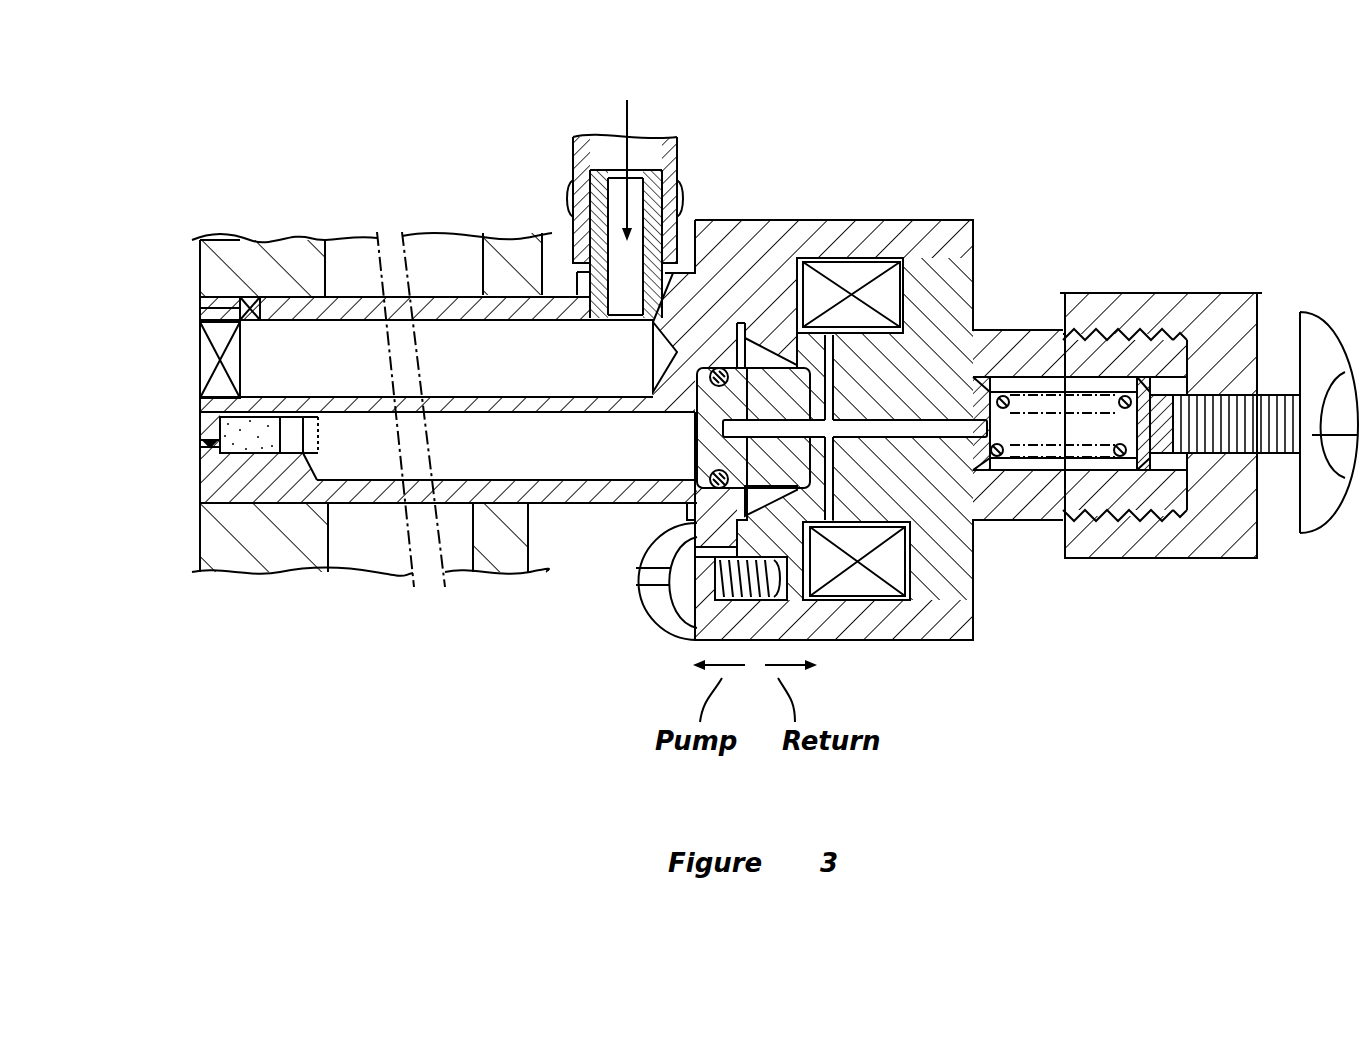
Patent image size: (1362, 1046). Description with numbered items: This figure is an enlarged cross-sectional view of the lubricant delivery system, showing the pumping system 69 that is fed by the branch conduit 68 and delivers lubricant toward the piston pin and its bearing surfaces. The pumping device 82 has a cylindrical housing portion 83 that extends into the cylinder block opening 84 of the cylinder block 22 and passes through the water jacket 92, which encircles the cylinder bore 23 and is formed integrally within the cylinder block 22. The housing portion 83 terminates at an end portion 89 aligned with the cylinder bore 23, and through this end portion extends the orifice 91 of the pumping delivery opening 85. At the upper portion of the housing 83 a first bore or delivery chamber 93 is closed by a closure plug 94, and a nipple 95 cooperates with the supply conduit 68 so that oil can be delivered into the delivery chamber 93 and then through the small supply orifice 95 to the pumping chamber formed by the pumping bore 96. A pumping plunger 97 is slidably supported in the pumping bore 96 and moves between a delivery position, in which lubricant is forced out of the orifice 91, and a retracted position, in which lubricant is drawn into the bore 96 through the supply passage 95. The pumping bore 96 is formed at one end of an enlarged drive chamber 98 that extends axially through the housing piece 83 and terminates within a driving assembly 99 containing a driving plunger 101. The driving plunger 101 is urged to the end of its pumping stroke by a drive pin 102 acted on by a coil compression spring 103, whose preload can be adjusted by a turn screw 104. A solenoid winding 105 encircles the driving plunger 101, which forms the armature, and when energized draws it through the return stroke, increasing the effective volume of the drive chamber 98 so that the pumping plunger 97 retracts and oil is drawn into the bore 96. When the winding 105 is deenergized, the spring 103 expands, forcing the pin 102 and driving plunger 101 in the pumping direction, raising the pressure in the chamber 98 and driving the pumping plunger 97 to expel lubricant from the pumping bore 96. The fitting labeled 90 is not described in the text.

The cylinder block 22 is at (234, 255).
The cylinder bore 23 is at (200, 270).
The branch conduit 68 is at (627, 100).
The pumping system 69 is at (1165, 233).
The pumping device 82 is at (1108, 286).
The cylindrical housing portion 83 is at (557, 498).
The cylinder block opening 84 is at (512, 297).
The pumping delivery opening 85 is at (212, 448).
The end portion 89 is at (200, 312).
The hose fitting 90 is at (672, 190).
The orifice 91 is at (200, 433).
The water jacket 92 is at (440, 245).
The delivery chamber 93 is at (482, 395).
The closure plug 94 is at (200, 358).
The nipple 95 is at (250, 418).
The pumping bore 96 is at (245, 452).
The pumping plunger 97 is at (303, 453).
The drive chamber 98 is at (580, 462).
The driving assembly 99 is at (775, 220).
The driving plunger 101 is at (783, 338).
The drive pin 102 is at (907, 417).
The coil compression spring 103 is at (1057, 390).
The turn screw 104 is at (1318, 510).
The solenoid winding 105 is at (855, 268).